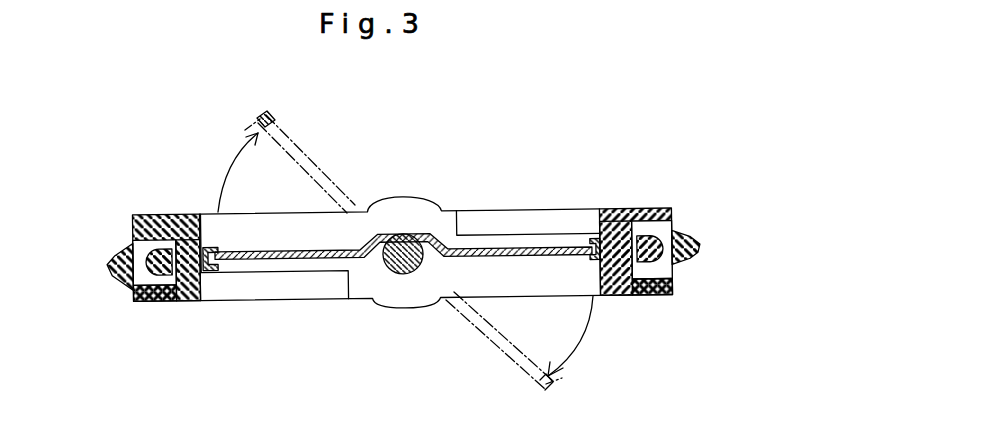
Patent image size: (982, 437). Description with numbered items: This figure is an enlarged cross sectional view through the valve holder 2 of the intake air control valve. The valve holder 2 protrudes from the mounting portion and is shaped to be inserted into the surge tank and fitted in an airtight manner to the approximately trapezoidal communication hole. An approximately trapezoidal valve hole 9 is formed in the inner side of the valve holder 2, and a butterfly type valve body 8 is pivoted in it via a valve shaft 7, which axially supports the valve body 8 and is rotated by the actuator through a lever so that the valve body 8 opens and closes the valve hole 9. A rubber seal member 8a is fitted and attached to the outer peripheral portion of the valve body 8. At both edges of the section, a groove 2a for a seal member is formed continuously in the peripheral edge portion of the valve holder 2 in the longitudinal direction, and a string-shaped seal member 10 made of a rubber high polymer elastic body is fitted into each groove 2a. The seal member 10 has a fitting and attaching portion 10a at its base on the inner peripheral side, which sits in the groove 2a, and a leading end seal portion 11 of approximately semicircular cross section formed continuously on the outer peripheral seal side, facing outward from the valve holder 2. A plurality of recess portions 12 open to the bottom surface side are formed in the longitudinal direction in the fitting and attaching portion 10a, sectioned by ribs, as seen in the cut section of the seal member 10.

The valve holder 2 is at (514, 171).
The groove 2a is at (157, 233).
The valve shaft 7 is at (403, 275).
The valve body 8 is at (350, 211).
The rubber seal member 8a is at (217, 283).
The valve hole 9 is at (503, 238).
The seal member 10 is at (120, 279).
The fitting and attaching portion 10a is at (148, 301).
The leading end seal portion 11 is at (103, 242).
The recess portions 12 is at (170, 301).